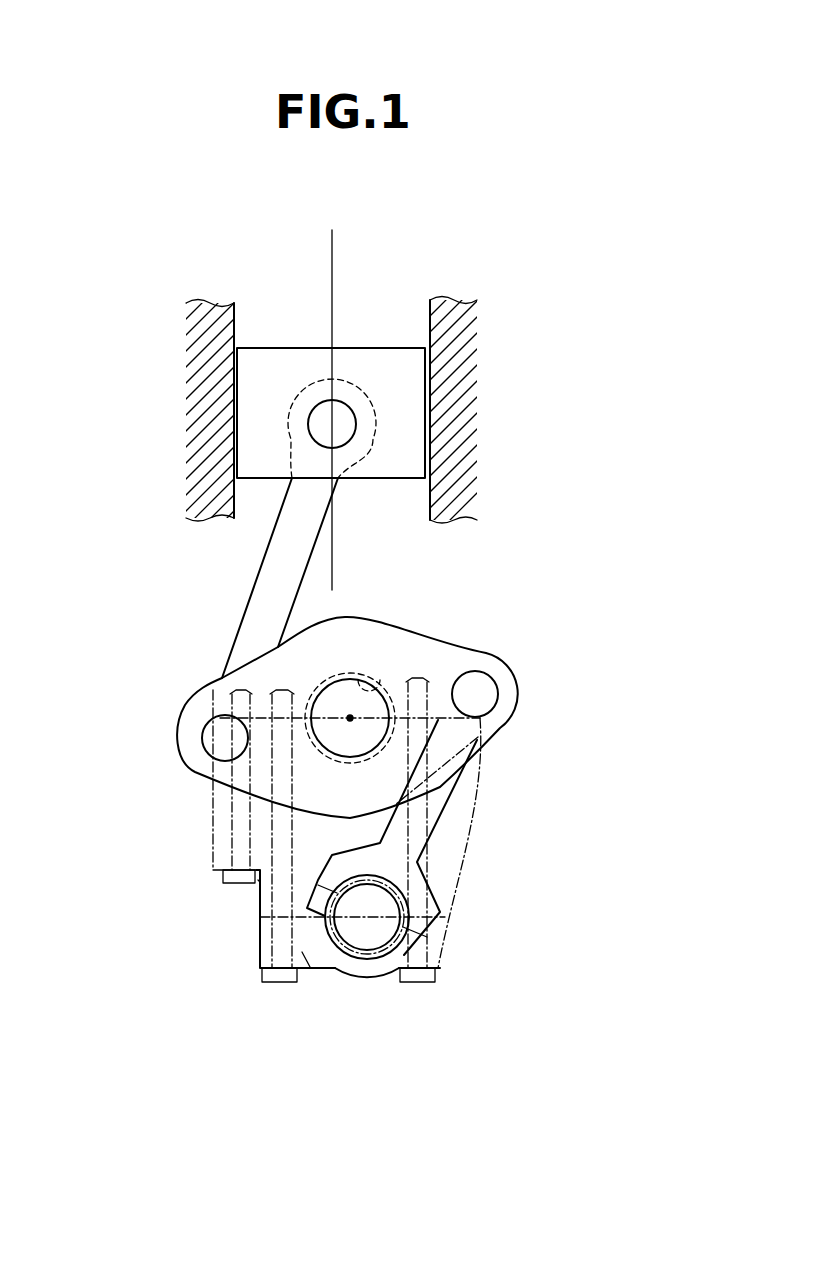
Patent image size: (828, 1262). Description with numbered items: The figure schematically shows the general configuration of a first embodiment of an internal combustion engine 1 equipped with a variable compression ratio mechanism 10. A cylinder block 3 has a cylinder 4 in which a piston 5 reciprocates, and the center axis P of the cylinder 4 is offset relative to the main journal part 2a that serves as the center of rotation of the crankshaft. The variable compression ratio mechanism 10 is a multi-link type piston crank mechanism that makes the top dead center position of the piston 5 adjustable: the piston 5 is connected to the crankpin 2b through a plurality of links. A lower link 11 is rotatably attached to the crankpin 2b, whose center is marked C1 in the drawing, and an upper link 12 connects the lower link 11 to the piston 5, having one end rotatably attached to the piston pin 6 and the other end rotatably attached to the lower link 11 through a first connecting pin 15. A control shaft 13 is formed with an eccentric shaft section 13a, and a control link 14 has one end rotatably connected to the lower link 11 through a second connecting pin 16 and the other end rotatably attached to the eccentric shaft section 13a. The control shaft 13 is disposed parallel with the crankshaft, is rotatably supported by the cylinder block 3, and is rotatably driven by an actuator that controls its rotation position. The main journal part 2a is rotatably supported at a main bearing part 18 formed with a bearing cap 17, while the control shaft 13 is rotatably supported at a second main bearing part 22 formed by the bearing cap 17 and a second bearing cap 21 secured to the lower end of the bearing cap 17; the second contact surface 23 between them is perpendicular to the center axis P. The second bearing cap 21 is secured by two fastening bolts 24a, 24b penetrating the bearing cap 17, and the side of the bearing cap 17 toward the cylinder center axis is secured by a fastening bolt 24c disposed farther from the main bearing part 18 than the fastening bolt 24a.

The internal combustion engine 1 is at (512, 378).
The main journal part 2a is at (402, 677).
The crankpin 2b is at (372, 683).
The cylinder block 3 is at (455, 460).
The cylinder 4 is at (428, 319).
The piston 5 is at (254, 405).
The piston pin 6 is at (316, 424).
The center axis P is at (331, 276).
The variable compression ratio mechanism 10 is at (505, 808).
The lower link 11 is at (192, 763).
The upper link 12 is at (267, 583).
The control shaft 13 is at (342, 967).
The eccentric shaft section 13a is at (400, 890).
The control link 14 is at (437, 792).
The first connecting pin 15 is at (210, 740).
The second connecting pin 16 is at (482, 693).
The bearing cap 17 is at (450, 852).
The main bearing part 18 is at (360, 673).
The second bearing cap 21 is at (303, 953).
The second main bearing part 22 is at (383, 977).
The second contact surface 23 is at (262, 933).
The fastening bolt 24a is at (280, 983).
The fastening bolt 24b is at (417, 983).
The fastening bolt 24c is at (240, 887).
The crank pin center C1 is at (350, 718).